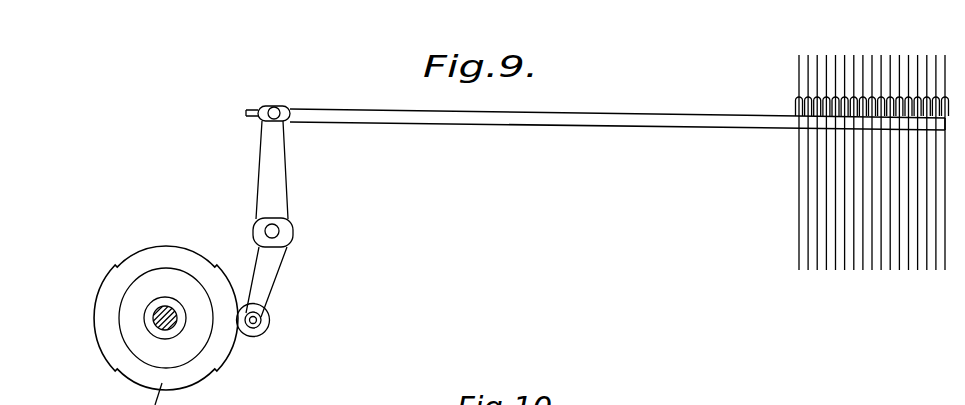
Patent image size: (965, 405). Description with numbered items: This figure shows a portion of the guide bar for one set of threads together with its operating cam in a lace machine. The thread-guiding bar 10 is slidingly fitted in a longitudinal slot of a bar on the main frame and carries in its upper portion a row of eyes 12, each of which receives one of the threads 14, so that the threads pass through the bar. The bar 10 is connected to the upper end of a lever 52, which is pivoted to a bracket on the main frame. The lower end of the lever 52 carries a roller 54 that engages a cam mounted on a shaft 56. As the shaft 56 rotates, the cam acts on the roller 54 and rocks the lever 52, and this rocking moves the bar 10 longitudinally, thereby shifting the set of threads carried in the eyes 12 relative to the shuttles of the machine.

The thread-guiding bar 10 is at (545, 123).
The eyes 12 is at (808, 99).
The set of threads 14 is at (853, 232).
The lever 52 is at (273, 172).
The roller 54 is at (268, 332).
The shaft 56 is at (147, 323).